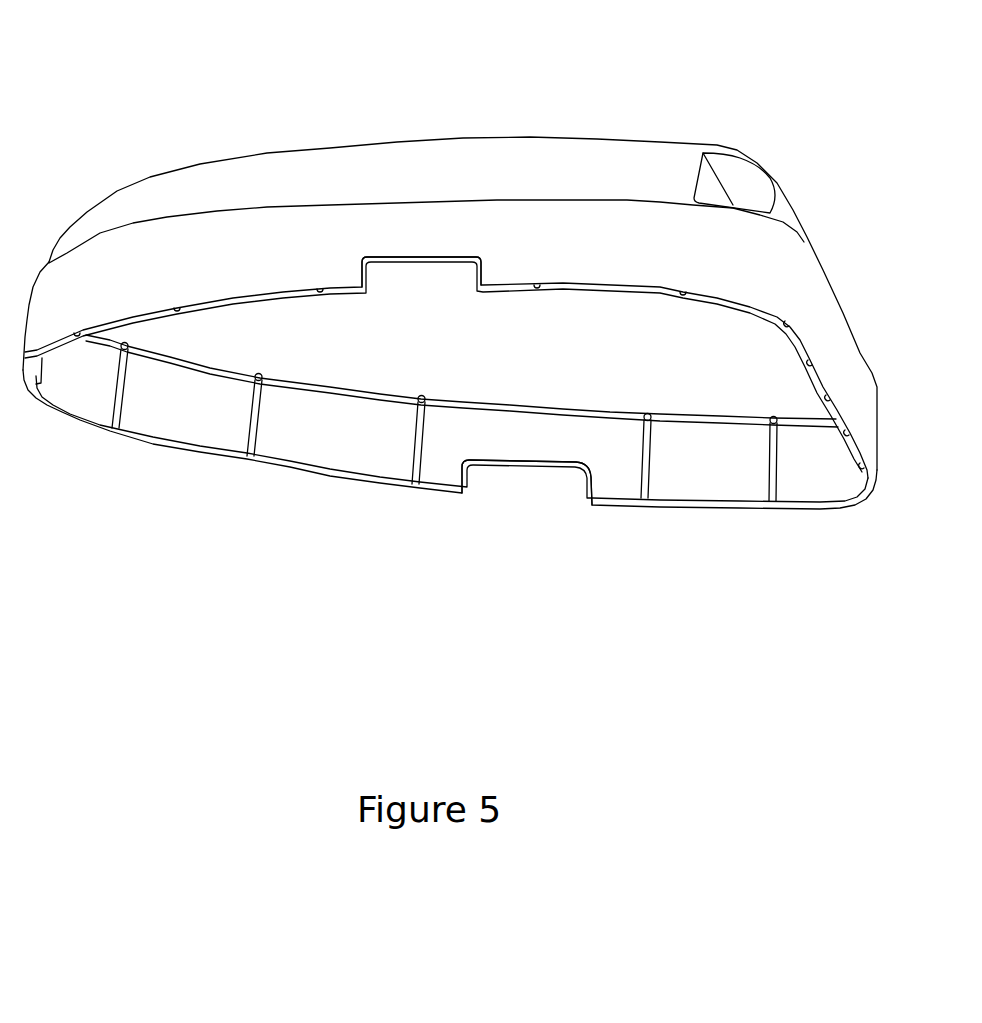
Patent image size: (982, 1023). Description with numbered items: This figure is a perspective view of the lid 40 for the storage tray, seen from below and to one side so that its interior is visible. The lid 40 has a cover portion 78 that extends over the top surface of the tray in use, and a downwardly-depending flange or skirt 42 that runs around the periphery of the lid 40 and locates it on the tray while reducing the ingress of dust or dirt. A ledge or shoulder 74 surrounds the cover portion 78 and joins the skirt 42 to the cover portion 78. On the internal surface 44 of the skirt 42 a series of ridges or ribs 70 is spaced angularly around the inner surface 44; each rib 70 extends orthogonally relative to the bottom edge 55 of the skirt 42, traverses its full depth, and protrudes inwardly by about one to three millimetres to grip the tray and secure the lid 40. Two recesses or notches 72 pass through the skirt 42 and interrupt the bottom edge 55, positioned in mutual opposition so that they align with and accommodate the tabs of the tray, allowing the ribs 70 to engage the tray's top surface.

The lid 40 is at (230, 120).
The skirt 42 is at (783, 273).
The internal surface 44 is at (817, 475).
The bottom edge 55 is at (67, 417).
The ribs 70 is at (418, 452).
The notches 72 is at (417, 267).
The shoulder 74 is at (450, 403).
The cover portion 78 is at (593, 177).